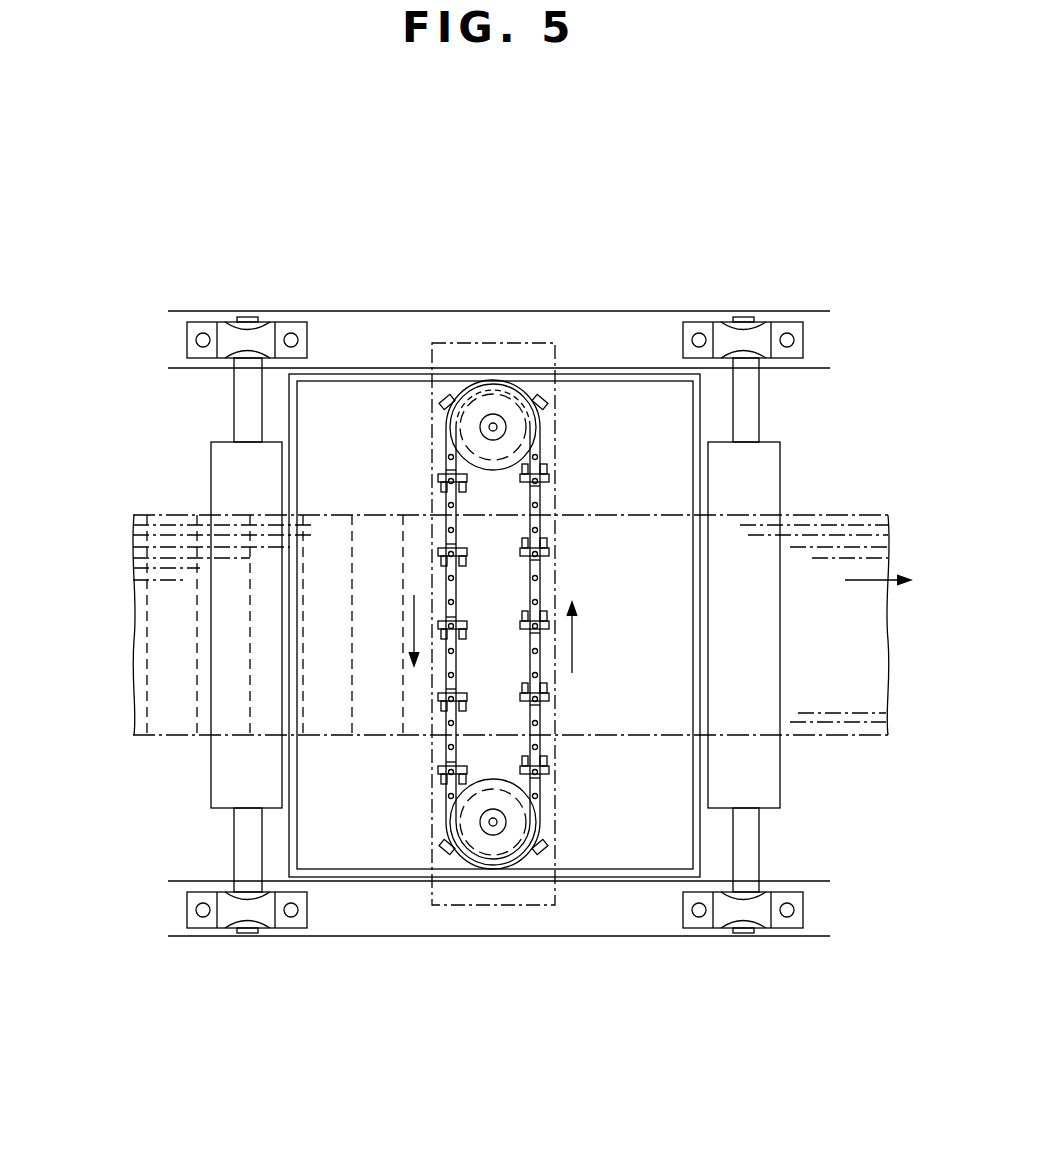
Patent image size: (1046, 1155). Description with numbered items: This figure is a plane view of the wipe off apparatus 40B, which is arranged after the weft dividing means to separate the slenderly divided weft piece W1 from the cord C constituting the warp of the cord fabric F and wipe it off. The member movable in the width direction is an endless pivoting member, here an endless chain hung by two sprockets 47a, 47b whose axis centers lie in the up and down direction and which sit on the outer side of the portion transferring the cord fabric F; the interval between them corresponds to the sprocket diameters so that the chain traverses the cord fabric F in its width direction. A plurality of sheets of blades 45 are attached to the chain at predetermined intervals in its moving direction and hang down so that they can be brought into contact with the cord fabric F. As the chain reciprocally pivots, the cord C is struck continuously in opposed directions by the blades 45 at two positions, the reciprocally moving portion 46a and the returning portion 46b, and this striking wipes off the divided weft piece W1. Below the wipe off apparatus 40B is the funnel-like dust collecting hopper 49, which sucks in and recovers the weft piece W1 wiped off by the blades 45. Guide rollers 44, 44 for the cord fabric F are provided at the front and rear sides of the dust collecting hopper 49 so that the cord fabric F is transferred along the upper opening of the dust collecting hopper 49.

The wipe off apparatus 40B is at (367, 280).
The guide roller 44 is at (225, 670).
The blade 45 is at (443, 552).
The reciprocally moving portion 46a is at (450, 743).
The returning portion 46b is at (536, 740).
The sprocket 47a is at (510, 402).
The sprocket 47b is at (500, 845).
The dust collecting hopper 49 is at (340, 855).
The cord fabric F is at (168, 513).
The cord C is at (840, 513).
The weft piece W1 is at (247, 690).